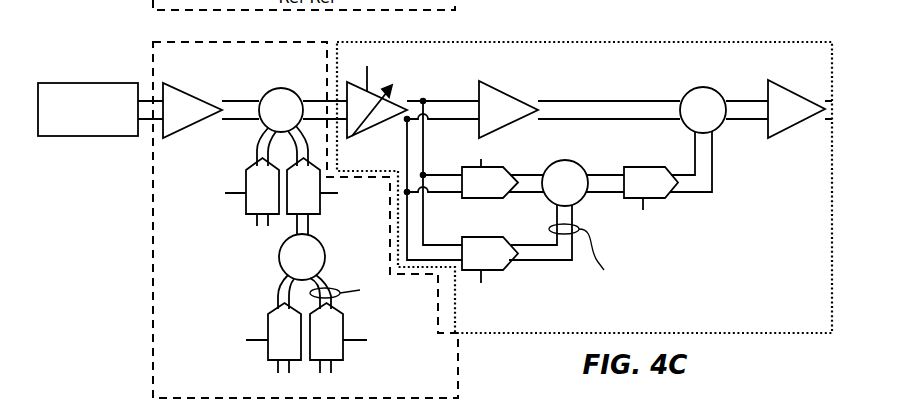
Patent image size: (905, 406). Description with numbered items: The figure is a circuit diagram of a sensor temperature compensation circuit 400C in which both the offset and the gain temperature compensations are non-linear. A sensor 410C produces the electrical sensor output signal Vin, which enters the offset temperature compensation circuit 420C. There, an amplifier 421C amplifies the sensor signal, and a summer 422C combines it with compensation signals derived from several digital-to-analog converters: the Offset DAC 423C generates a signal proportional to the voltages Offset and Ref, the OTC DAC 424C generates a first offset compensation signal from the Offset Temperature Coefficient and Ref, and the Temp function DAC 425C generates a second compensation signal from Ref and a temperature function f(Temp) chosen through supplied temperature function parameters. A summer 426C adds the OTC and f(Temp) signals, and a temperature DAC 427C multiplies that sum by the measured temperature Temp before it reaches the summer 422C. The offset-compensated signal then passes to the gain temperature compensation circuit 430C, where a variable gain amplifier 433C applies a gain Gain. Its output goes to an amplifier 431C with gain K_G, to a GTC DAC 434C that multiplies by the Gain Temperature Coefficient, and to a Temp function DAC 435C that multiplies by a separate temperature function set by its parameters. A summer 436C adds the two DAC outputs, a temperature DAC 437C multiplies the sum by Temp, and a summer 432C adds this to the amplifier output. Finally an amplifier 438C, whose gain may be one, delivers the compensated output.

The sensor temperature compensation circuit 400C is at (605, 34).
The sensor 410C is at (70, 132).
The offset temperature compensation circuit 420C is at (152, 47).
The amplifier 421C is at (178, 89).
The summer 422C is at (267, 93).
The Offset DAC 423C is at (246, 178).
The OTC DAC 424C is at (268, 326).
The Temp function DAC 425C is at (343, 326).
The summer 426C is at (325, 253).
The temperature DAC 427C is at (322, 208).
The gain temperature compensation circuit 430C is at (722, 42).
The amplifier 431C is at (507, 93).
The summer 432C is at (693, 89).
The variable gain amplifier 433C is at (383, 125).
The GTC DAC 434C is at (508, 166).
The Temp function DAC 435C is at (476, 237).
The summer 436C is at (582, 164).
The temperature DAC 437C is at (642, 166).
The amplifier 438C is at (792, 92).